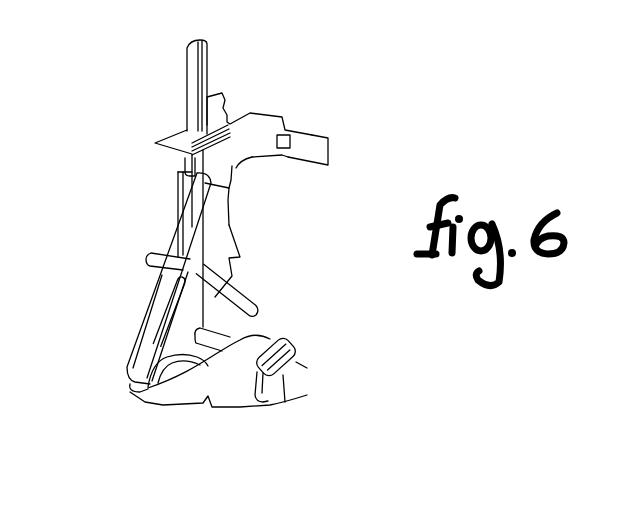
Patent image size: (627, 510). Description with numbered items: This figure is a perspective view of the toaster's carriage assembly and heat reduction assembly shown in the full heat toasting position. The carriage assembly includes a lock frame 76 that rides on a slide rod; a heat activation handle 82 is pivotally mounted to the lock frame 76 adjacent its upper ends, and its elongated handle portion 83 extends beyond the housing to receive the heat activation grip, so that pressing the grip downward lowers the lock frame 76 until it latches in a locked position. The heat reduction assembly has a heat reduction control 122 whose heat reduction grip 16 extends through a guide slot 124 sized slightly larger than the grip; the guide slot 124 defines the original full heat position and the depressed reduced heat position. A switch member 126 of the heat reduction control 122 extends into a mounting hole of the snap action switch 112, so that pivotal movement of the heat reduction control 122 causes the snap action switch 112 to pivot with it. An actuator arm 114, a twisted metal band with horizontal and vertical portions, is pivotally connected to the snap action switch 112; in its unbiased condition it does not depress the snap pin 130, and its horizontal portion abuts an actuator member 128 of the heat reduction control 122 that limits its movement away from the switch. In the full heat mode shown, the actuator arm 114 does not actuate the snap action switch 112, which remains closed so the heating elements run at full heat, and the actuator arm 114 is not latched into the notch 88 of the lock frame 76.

The heat reduction grip 16 is at (298, 364).
The lock frame 76 is at (255, 128).
The heat activation handle 82 is at (232, 165).
The elongated handle portion 83 is at (312, 147).
The notch 88 is at (232, 248).
The snap action switch 112 is at (138, 346).
The actuator arm 114 is at (233, 195).
The heat reduction control 122 is at (213, 318).
The guide slot 124 is at (260, 404).
The switch member 126 is at (251, 307).
The actuator member 128 is at (149, 252).
The snap pin 130 is at (178, 284).